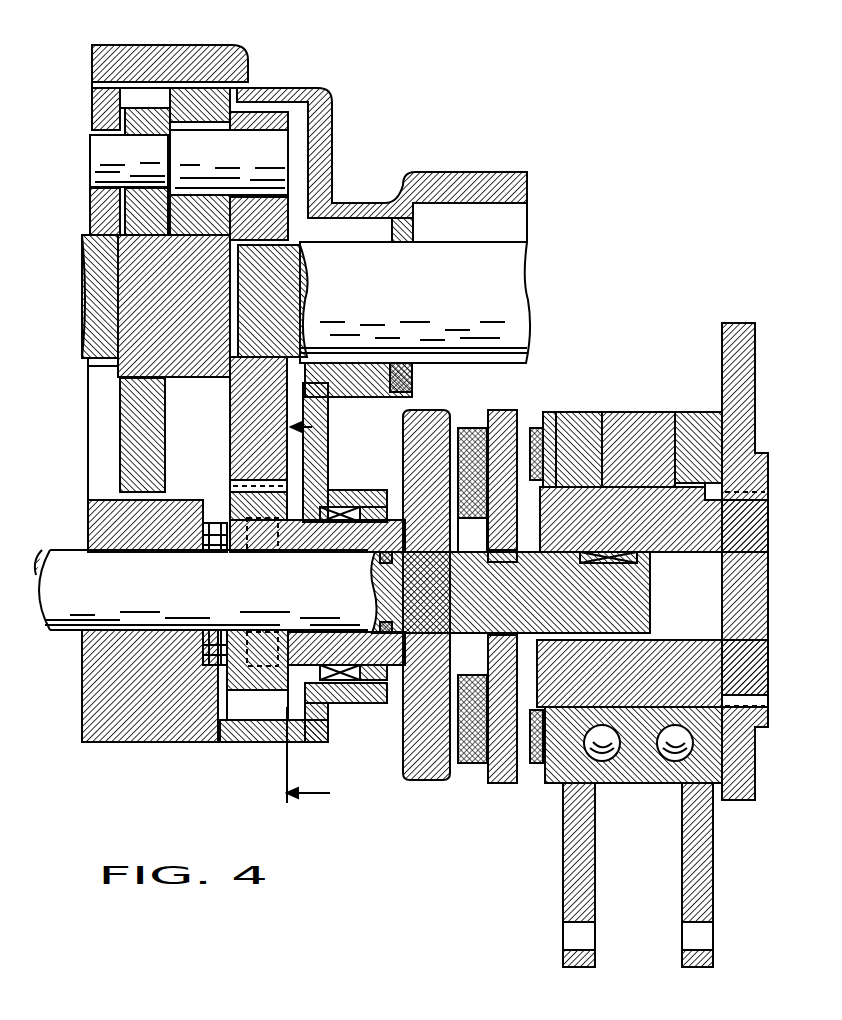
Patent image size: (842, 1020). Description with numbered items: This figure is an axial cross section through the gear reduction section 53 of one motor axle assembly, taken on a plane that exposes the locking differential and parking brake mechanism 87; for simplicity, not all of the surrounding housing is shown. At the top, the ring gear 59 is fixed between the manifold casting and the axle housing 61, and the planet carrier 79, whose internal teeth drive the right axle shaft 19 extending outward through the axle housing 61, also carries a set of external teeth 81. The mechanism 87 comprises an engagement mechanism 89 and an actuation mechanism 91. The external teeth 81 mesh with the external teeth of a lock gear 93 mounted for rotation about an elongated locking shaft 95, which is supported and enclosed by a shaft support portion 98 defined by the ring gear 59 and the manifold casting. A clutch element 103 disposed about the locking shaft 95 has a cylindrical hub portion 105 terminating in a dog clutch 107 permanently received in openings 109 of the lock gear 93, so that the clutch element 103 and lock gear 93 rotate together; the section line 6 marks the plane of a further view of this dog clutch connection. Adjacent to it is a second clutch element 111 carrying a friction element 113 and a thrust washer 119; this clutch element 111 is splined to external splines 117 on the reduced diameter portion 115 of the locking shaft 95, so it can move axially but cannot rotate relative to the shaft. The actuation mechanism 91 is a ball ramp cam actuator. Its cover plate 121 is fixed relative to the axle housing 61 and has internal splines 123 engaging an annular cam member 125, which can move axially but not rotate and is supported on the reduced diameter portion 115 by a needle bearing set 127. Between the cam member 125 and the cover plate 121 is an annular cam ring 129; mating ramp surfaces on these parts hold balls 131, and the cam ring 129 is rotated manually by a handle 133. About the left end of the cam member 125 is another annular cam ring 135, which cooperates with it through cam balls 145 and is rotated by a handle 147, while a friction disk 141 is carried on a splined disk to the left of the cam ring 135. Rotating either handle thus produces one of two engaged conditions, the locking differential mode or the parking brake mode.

The gear reduction section 53 is at (72, 82).
The ring gear 59 is at (176, 64).
The axle housing 61 is at (304, 96).
The right axle shaft 19 is at (512, 310).
The planet carrier 79 is at (242, 434).
The external teeth 81 is at (230, 487).
The section line 6 is at (349, 593).
The cylindrical hub portion 105 is at (368, 503).
The openings 109 is at (265, 553).
The dog clutch 107 is at (278, 638).
The locking shaft 95 is at (114, 608).
The lock gear 93 is at (243, 684).
The shaft support portion 98 is at (142, 728).
The engagement mechanism 89 is at (324, 740).
The locking differential and parking brake mechanism 87 is at (416, 828).
The clutch element 103 is at (406, 744).
The friction element 113 is at (468, 740).
The clutch element 111 is at (503, 766).
The external splines 117 is at (476, 560).
The thrust washer 119 is at (507, 560).
The friction disk 141 is at (532, 427).
The reduced diameter portion 115 is at (637, 592).
The actuation mechanism 91 is at (658, 392).
The annular cam ring 135 is at (588, 422).
The annular cam ring 129 is at (697, 430).
The annular cam member 125 is at (652, 597).
The internal splines 123 is at (750, 495).
The needle bearing set 127 is at (606, 566).
The cover plate 121 is at (748, 763).
The cam balls 145 is at (612, 750).
The balls 131 is at (667, 760).
The handle 147 is at (590, 870).
The handle 133 is at (707, 867).